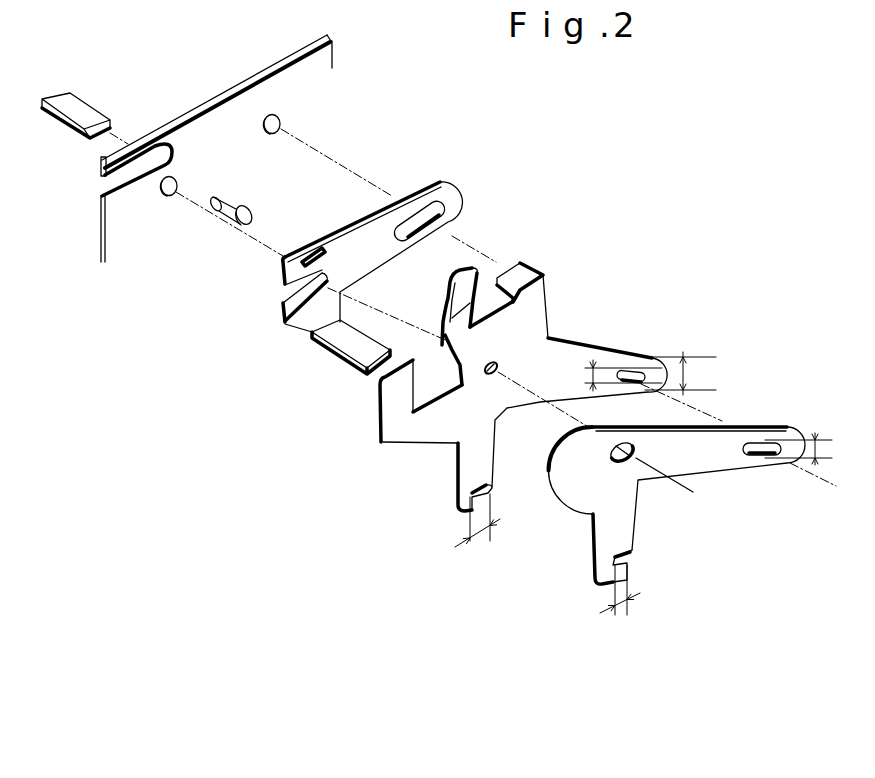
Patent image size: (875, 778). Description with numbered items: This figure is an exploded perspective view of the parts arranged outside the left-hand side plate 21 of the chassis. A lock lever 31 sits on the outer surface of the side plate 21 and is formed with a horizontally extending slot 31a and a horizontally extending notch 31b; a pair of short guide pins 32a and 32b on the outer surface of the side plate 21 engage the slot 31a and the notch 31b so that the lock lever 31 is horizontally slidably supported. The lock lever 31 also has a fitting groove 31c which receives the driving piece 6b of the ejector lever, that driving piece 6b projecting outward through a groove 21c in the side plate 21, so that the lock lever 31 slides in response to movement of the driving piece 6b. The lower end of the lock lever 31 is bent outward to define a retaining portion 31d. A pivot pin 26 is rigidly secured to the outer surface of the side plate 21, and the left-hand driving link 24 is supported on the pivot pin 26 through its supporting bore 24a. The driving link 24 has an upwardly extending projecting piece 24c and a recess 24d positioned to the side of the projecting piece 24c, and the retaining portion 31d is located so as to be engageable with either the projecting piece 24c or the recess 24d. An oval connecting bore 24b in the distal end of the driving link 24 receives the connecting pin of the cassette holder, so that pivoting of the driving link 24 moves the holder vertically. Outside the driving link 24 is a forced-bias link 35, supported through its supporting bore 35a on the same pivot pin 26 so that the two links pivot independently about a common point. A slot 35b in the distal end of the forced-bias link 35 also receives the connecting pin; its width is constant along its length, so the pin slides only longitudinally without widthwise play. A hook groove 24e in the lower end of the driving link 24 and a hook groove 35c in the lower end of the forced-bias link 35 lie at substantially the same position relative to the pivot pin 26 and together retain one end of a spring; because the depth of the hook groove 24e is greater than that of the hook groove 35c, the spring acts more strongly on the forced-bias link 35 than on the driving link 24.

The driving piece 6b is at (78, 108).
The left-hand side plate 21 is at (258, 92).
The groove 21c is at (158, 150).
The guide pin 32a is at (280, 117).
The guide pin 32b is at (171, 196).
The pivot pin 26 is at (243, 200).
The lock lever 31 is at (375, 256).
The slot 31a is at (452, 207).
The notch 31b is at (280, 300).
The fitting groove 31c is at (315, 247).
The retaining portion 31d is at (348, 340).
The driving link 24 is at (585, 397).
The supporting bore 24a is at (513, 350).
The connecting bore 24b is at (622, 368).
The projecting piece 24c is at (390, 403).
The recess 24d is at (430, 400).
The hook groove 24e is at (487, 487).
The forced-bias link 35 is at (693, 533).
The supporting bore 35a is at (630, 467).
The slot 35b is at (757, 468).
The hook groove 35c is at (628, 553).